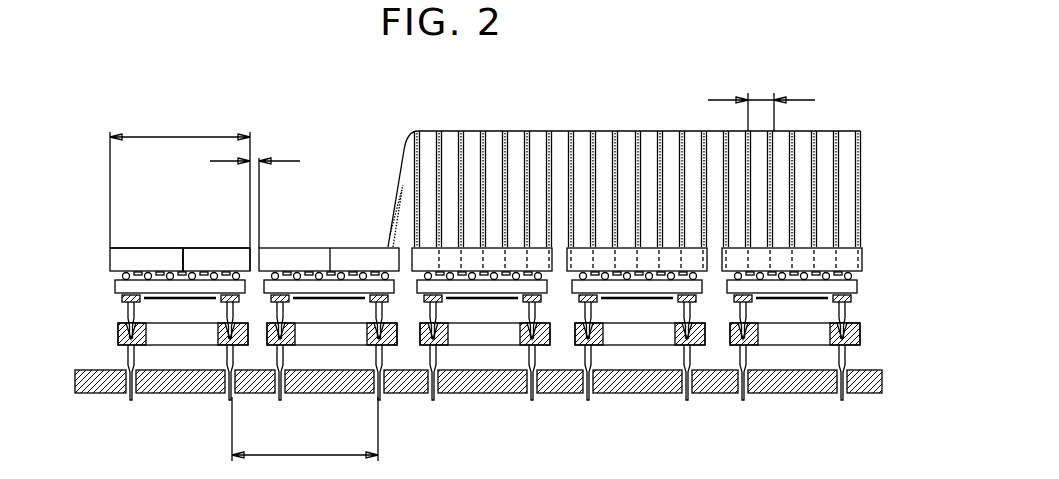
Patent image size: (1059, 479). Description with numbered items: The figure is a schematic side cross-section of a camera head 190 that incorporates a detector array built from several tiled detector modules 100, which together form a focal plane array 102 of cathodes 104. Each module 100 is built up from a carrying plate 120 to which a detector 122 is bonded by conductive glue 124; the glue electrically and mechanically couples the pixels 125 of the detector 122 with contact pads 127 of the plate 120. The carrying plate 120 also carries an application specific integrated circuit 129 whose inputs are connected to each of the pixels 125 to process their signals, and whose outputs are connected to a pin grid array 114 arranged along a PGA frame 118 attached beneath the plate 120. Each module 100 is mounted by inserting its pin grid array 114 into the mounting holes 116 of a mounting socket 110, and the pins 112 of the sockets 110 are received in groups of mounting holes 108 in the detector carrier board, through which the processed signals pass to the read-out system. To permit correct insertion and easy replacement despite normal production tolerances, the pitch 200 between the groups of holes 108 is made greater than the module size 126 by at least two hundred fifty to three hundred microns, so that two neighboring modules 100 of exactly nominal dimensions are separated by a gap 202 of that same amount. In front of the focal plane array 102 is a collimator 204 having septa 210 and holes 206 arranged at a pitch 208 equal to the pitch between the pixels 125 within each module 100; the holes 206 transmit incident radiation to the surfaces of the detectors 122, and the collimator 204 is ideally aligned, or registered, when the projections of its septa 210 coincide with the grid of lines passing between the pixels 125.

The detector module 100 is at (147, 218).
The focal plane array 102 is at (118, 243).
The cathode 104 is at (212, 250).
The mounting hole 108 is at (230, 388).
The mounting socket 110 is at (122, 332).
The pin 112 is at (128, 395).
The pin grid array 114 is at (125, 309).
The socket mounting hole 116 is at (118, 342).
The PGA frame 118 is at (152, 303).
The carrying plate 120 is at (118, 288).
The detector 122 is at (185, 253).
The conductive glue 124 is at (245, 268).
The pixel 125 is at (137, 272).
The module size 126 is at (183, 137).
The contact pad 127 is at (118, 247).
The application specific integrated circuit 129 is at (185, 303).
The camera head 190 is at (609, 161).
The pitch 200 is at (293, 455).
The gap 202 is at (300, 161).
The collimator 204 is at (398, 197).
The collimator hole 206 is at (607, 148).
The collimator pitch 208 is at (762, 100).
The septum 210 is at (480, 148).